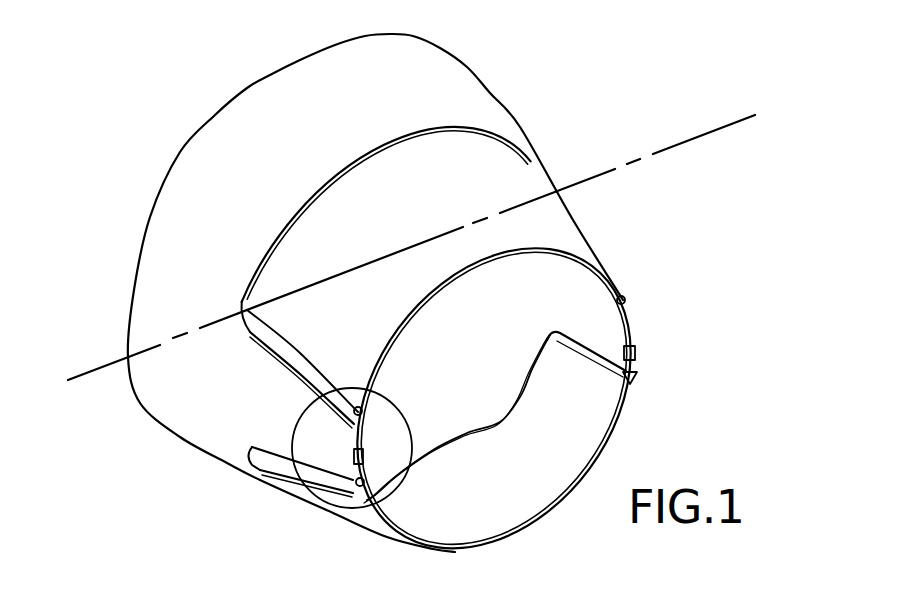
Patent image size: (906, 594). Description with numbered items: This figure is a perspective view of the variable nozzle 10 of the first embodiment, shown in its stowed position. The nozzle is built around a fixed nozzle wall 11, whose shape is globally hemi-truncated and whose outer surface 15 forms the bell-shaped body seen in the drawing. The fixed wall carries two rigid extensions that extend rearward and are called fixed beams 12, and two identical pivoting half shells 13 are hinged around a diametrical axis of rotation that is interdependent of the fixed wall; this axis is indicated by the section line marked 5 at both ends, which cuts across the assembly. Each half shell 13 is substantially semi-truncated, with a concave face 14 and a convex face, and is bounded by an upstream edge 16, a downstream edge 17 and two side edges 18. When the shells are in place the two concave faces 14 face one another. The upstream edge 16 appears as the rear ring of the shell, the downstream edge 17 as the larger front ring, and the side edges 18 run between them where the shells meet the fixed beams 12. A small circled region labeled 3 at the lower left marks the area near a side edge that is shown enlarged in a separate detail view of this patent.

The variable nozzle 10 is at (527, 123).
The fixed nozzle wall 11 is at (375, 293).
The fixed beams 12 is at (267, 419).
The pivoting half shells 13 is at (350, 336).
The concave faces 14 is at (430, 137).
The outer surface of housing 15 is at (247, 89).
The upstream edge 16 is at (385, 229).
The downstream edge 17 is at (418, 318).
The side edges 18 is at (366, 418).
The detail circle (FIG. 3) 3 is at (310, 497).
The section line 5- 5 is at (410, 236).